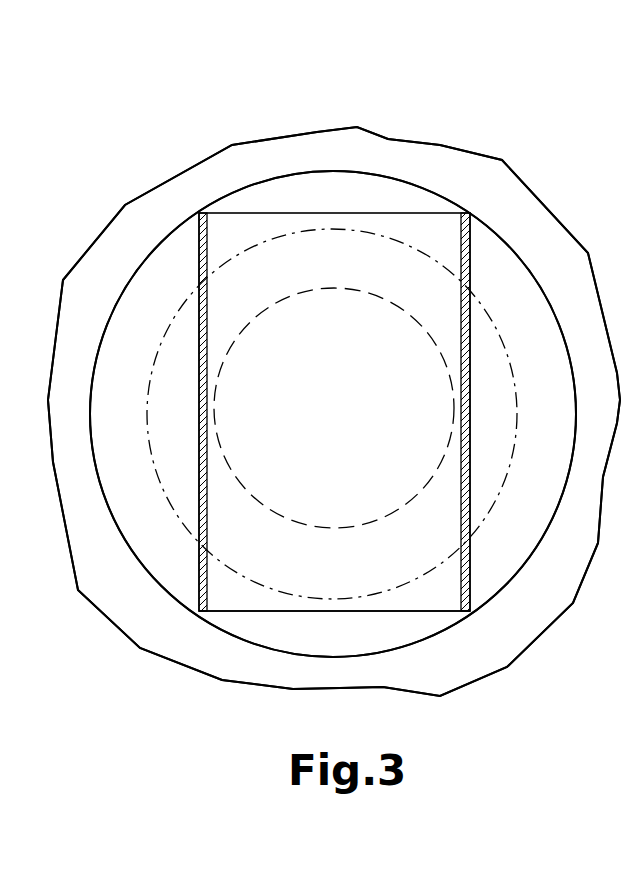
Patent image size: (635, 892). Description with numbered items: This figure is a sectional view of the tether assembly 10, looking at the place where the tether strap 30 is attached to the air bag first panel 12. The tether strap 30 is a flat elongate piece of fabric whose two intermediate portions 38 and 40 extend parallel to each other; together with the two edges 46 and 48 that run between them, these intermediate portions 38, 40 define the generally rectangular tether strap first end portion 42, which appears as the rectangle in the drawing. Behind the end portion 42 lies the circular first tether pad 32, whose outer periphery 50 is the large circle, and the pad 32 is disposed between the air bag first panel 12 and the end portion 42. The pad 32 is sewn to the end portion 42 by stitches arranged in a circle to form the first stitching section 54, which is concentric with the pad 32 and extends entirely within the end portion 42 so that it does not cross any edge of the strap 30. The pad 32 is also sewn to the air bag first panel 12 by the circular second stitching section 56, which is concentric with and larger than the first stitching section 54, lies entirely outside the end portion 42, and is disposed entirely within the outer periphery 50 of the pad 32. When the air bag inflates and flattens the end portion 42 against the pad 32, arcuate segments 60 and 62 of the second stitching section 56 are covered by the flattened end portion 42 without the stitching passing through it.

The tether assembly 10 is at (512, 206).
The air bag first panel 12 is at (447, 665).
The tether strap 30 is at (340, 212).
The first tether pad 32 is at (120, 280).
The intermediate portion 38 is at (199, 252).
The intermediate portion 40 is at (470, 257).
The tether strap first end portion 42 is at (232, 227).
The edge 46 is at (408, 213).
The edge 48 is at (280, 613).
The outer periphery 50 is at (113, 527).
The first stitching section 54 is at (257, 320).
The second stitching section 56 is at (153, 360).
The arcuate segment 60 is at (250, 250).
The arcuate segment 62 is at (248, 572).